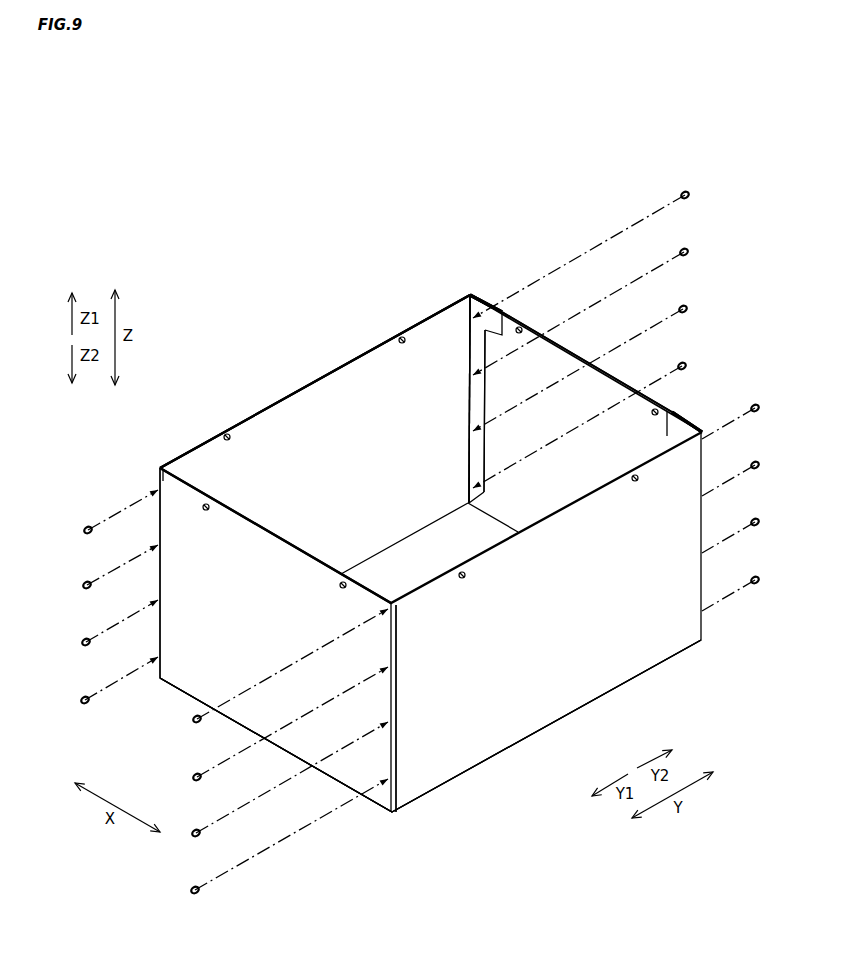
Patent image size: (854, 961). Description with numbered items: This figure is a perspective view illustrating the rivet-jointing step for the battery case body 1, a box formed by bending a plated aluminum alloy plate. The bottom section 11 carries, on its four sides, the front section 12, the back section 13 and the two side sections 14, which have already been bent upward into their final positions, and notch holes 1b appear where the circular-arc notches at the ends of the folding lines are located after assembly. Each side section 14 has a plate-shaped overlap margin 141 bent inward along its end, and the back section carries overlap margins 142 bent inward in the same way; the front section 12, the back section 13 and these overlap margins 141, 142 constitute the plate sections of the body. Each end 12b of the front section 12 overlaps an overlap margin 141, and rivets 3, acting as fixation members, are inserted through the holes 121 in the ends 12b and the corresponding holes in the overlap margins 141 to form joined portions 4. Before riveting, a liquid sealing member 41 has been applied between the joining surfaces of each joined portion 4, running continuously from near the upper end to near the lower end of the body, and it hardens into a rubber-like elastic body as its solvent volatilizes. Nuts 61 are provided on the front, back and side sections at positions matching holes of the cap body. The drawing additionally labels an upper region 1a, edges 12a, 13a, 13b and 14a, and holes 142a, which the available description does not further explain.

The battery case body 1 is at (720, 521).
The upper opening of housing 1a is at (574, 353).
The notch hole 1b is at (160, 680).
The rivet 3 is at (690, 192).
The joined portion 4 is at (168, 468).
The bottom section 11 is at (498, 760).
The front section 12 is at (237, 712).
The upper edge of second side wall 12a is at (198, 518).
The end of front section 12b is at (157, 681).
The back section 13 is at (624, 384).
The upper edge of third side wall 13a is at (522, 328).
The end edge of third side wall 13b is at (500, 313).
The side section 14 is at (305, 387).
The upper edge of fourth side wall 14a is at (225, 434).
The liquid sealing member 41 is at (166, 474).
The nut 61 is at (230, 439).
The hole 121 is at (159, 490).
The overlap margin 141 is at (158, 466).
The overlap margin 142 is at (501, 312).
The bolt hole of bent portion 142a is at (471, 316).